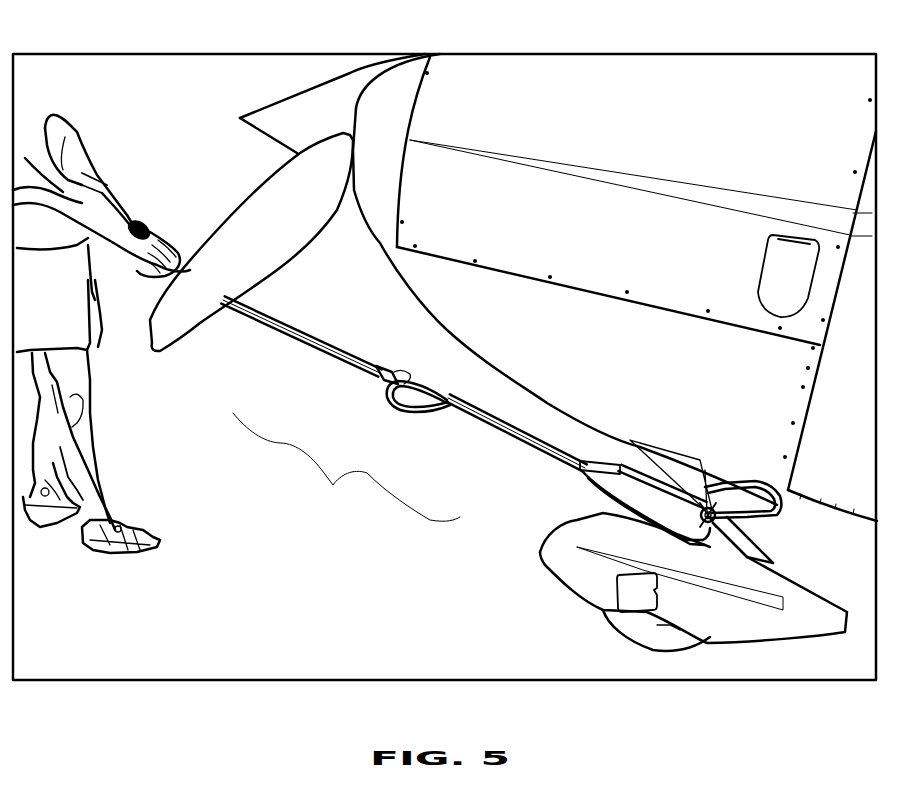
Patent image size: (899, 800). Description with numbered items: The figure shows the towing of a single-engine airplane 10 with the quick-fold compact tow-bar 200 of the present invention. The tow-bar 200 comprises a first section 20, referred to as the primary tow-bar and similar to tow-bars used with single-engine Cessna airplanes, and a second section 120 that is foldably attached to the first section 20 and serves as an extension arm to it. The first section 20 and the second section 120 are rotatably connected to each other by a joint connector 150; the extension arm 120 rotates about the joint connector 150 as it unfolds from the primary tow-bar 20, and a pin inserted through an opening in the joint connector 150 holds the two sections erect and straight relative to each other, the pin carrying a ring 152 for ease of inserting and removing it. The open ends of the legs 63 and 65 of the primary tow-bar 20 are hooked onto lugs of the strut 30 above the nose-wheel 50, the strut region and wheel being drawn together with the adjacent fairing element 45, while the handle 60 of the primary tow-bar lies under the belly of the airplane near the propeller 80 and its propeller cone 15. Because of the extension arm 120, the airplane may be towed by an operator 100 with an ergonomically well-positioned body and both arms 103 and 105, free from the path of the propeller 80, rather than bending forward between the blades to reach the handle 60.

The airplane 10 is at (623, 70).
The propeller cone 15 is at (287, 113).
The first section (primary tow-bar) 20 is at (502, 420).
The strut 30 is at (713, 513).
The pod/tail housing 45 is at (790, 630).
The nose-wheel 50 is at (633, 630).
The handle 60 is at (408, 413).
The leg (open end) of primary tow-bar 63 is at (707, 512).
The leg (open end) of primary tow-bar 65 is at (723, 515).
The propeller 80 is at (283, 242).
The operator 100 is at (104, 328).
The arm (hand) of operator 103 is at (75, 220).
The arm (hand) of operator 105 is at (130, 222).
The second section (extension arm) 120 is at (323, 378).
The joint connector 150 is at (383, 372).
The ring 152 is at (403, 380).
The quick-fold compact tow-bar 200 is at (303, 492).